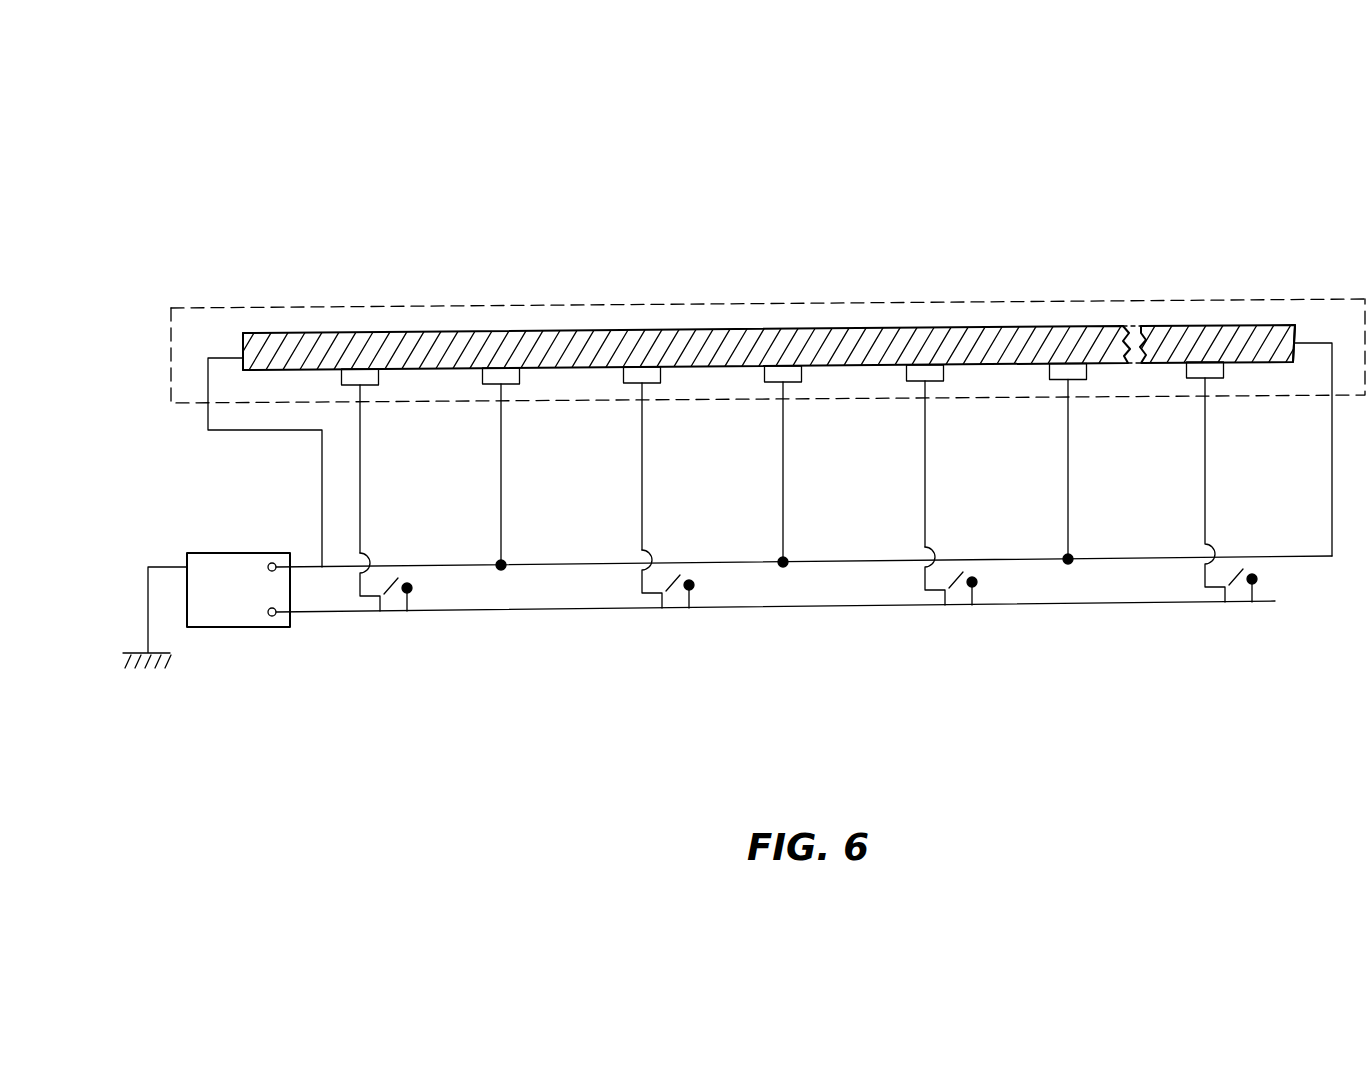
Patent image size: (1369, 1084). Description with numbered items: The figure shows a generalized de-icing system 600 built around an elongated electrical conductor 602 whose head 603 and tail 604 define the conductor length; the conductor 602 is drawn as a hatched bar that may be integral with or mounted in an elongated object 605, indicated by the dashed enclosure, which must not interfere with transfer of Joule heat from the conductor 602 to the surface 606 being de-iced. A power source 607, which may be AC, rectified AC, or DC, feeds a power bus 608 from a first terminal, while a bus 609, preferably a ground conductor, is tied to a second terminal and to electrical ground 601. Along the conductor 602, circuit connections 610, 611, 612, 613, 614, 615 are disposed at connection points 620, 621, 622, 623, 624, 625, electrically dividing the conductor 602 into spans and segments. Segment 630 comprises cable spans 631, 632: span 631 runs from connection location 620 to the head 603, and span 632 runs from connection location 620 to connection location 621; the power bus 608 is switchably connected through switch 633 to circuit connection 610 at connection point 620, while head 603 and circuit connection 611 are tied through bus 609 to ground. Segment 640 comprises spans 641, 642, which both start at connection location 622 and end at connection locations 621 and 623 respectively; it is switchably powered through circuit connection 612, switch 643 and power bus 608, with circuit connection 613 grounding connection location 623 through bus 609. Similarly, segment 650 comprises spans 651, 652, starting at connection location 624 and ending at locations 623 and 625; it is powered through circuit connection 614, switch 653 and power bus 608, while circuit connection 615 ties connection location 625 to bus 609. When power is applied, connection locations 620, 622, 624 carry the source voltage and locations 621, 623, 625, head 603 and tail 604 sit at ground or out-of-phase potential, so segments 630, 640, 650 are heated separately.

The system 600 is at (268, 113).
The electrical ground 601 is at (133, 651).
The elongated electrical conductor 602 is at (1162, 327).
The head 603 is at (254, 332).
The tail 604 is at (1293, 325).
The elongated object 605 is at (185, 327).
The surface 606 is at (760, 292).
The power source 607 is at (218, 623).
The power bus 608 is at (500, 610).
The bus 609 is at (588, 563).
The circuit connection 610 is at (372, 387).
The circuit connection 611 is at (513, 386).
The circuit connection 612 is at (654, 384).
The circuit connection 613 is at (795, 383).
The circuit connection 614 is at (937, 382).
The circuit connection 615 is at (1080, 381).
The connection point 620 is at (364, 332).
The connection point 621 is at (506, 331).
The connection point 622 is at (648, 330).
The connection point 623 is at (792, 329).
The connection point 624 is at (932, 329).
The connection point 625 is at (1078, 328).
The segment 630 is at (338, 228).
The span 631 is at (291, 332).
The span 632 is at (432, 332).
The switch 633 is at (380, 612).
The segment 640 is at (681, 248).
The span 641 is at (579, 331).
The span 642 is at (722, 330).
The switch 643 is at (665, 608).
The segment 650 is at (961, 241).
The span 651 is at (862, 329).
The span 652 is at (1005, 328).
The switch 653 is at (950, 605).